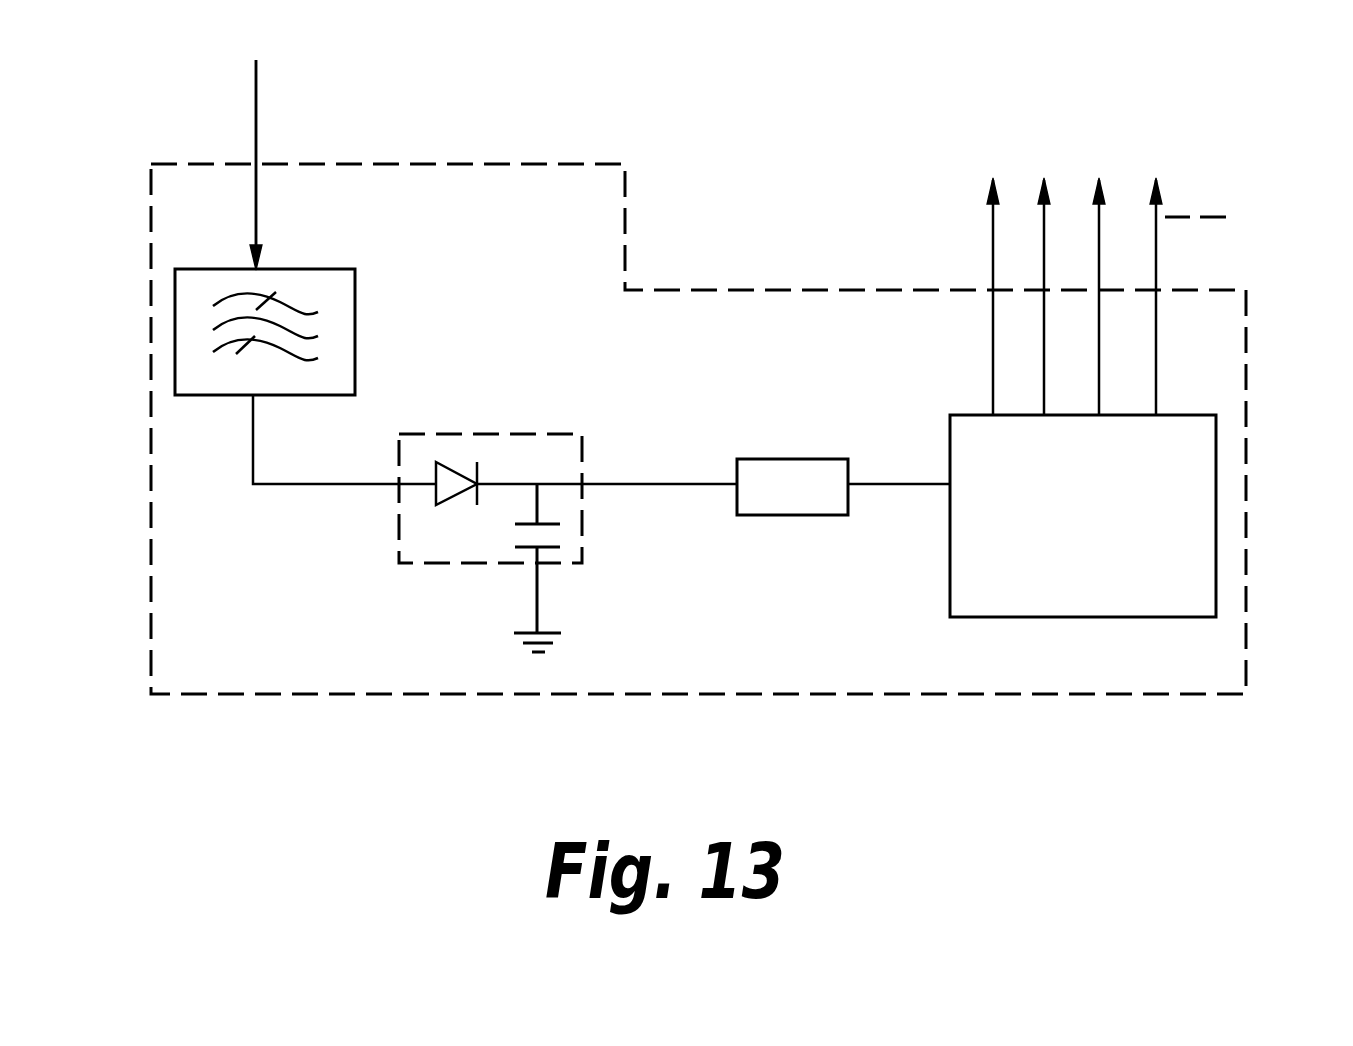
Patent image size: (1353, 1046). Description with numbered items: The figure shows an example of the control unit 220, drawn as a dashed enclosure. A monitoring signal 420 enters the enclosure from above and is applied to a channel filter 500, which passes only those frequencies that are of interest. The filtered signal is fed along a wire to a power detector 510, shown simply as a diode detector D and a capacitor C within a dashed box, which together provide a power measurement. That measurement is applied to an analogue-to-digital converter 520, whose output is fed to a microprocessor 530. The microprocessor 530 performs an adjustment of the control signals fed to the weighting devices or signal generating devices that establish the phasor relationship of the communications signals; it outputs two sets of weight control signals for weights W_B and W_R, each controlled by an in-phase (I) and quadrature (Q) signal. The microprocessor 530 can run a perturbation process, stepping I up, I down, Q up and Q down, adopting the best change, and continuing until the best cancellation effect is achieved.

The control unit 220 is at (1213, 288).
The monitoring signal 420 is at (335, 163).
The channel filter 500 is at (335, 303).
The power detector 510 is at (517, 426).
The analogue-to-digital converter 520 is at (769, 454).
The microprocessor 530 is at (1200, 609).